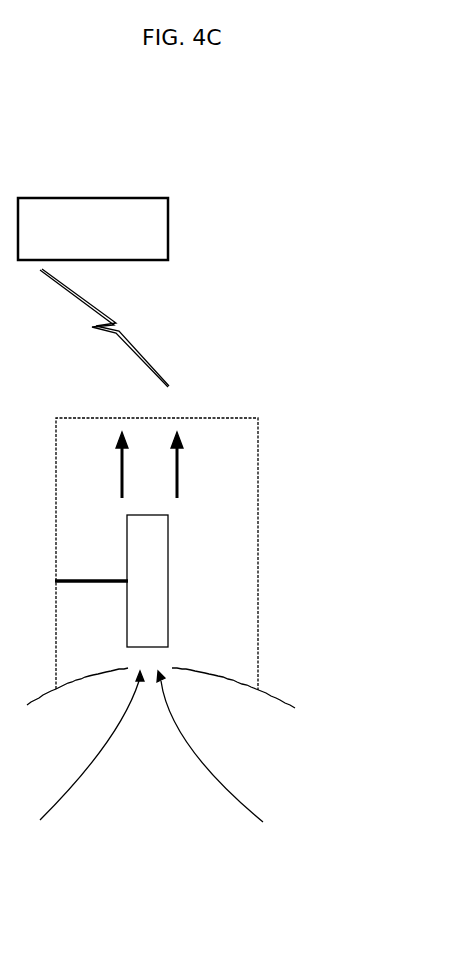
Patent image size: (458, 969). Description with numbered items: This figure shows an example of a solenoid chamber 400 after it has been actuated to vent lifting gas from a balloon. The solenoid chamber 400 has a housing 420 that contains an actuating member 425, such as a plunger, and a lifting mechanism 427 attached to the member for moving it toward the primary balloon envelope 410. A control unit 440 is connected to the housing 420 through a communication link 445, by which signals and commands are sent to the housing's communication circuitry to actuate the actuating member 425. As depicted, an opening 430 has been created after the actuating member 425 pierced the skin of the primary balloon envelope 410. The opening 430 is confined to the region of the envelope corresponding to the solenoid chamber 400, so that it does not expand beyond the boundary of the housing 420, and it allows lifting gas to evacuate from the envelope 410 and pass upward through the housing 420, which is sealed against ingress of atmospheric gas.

The solenoid chamber 400 is at (392, 48).
The primary balloon envelope 410 is at (268, 678).
The housing 420 is at (56, 446).
The actuating member 425 is at (168, 545).
The lifting mechanism 427 is at (97, 580).
The opening 430 is at (128, 447).
The control unit 440 is at (97, 198).
The communication link 445 is at (82, 302).